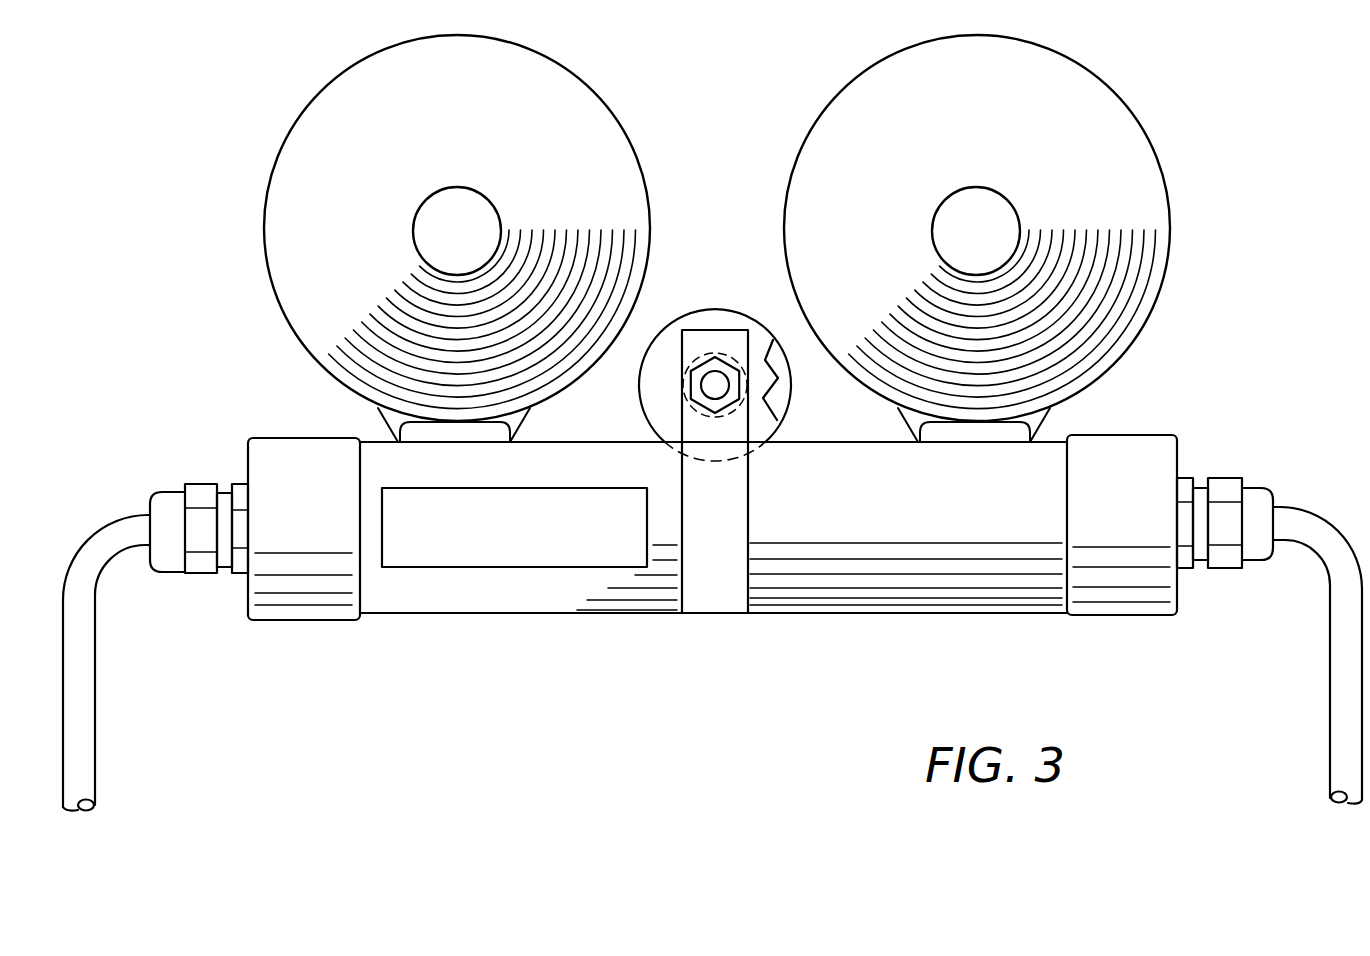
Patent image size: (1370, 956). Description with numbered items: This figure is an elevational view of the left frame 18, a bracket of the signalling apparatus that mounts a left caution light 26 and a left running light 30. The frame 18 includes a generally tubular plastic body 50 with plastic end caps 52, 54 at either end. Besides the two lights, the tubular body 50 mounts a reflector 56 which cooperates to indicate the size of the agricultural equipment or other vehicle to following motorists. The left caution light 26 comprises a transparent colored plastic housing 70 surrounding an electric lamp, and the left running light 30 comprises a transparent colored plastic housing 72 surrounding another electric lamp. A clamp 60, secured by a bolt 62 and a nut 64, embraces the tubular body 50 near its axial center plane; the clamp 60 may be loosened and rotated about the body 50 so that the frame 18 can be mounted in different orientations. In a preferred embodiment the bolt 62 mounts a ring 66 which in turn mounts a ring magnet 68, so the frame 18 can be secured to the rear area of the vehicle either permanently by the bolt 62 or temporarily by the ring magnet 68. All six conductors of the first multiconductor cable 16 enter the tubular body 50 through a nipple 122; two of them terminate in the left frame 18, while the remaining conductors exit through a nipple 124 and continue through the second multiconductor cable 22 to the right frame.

The first multiconductor cable 16 is at (85, 697).
The left frame 18 is at (880, 611).
The second multiconductor cable 22 is at (1335, 688).
The left caution light 26 is at (567, 105).
The left running light 30 is at (850, 97).
The generally tubular body 50 is at (507, 593).
The end cap 52 is at (266, 452).
The end cap 54 is at (1173, 452).
The reflector 56 is at (507, 543).
The clamp 60 is at (716, 592).
The bolt 62 is at (712, 392).
The nut 64 is at (695, 376).
The ring 66 is at (716, 322).
The ring magnet 68 is at (785, 395).
The transparent colored plastic housing 70 is at (363, 214).
The transparent colored plastic housing 72 is at (880, 210).
The nipple 122 is at (176, 560).
The nipple 124 is at (1262, 553).